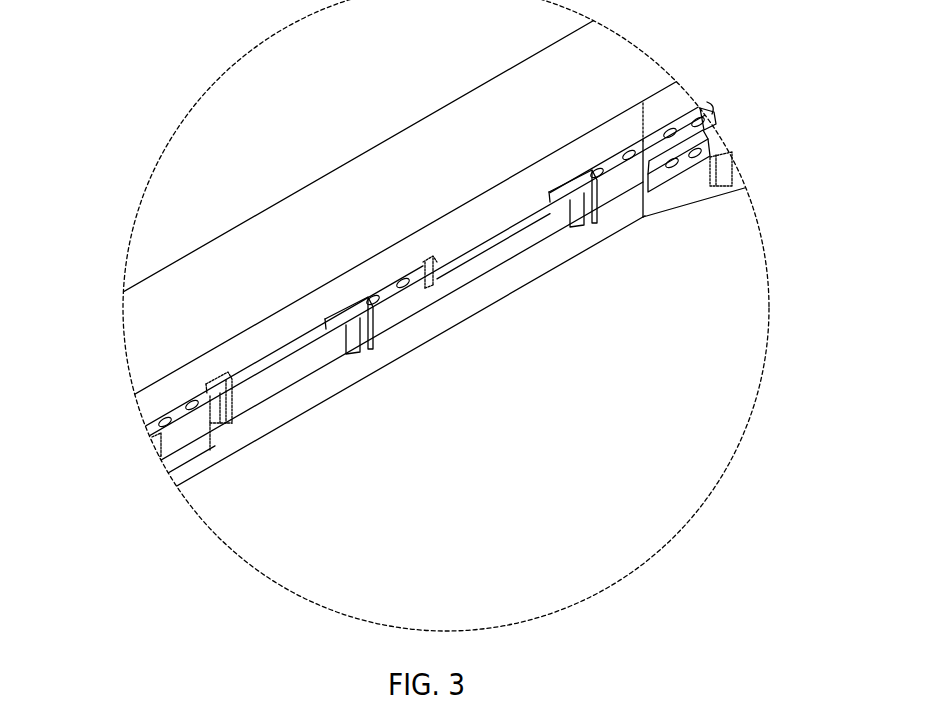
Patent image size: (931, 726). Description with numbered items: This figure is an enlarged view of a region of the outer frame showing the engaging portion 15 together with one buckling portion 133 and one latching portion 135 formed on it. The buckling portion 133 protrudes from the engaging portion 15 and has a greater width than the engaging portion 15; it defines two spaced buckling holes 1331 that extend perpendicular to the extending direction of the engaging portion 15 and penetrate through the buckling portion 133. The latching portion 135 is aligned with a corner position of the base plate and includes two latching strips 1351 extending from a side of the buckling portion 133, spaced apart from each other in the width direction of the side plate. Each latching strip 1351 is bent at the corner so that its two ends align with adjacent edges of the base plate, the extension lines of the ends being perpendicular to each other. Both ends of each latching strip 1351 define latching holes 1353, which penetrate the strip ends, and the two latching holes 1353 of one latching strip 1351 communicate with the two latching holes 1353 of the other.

The engaging portion 15 is at (485, 262).
The buckling portion 133 is at (398, 318).
The buckling hole 1331 is at (380, 302).
The latching portion 135 is at (698, 170).
The latching strip 1351 is at (708, 178).
The latching hole 1353 is at (697, 125).